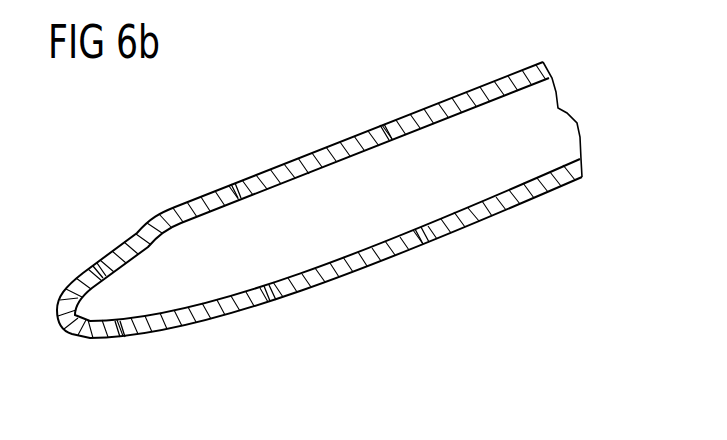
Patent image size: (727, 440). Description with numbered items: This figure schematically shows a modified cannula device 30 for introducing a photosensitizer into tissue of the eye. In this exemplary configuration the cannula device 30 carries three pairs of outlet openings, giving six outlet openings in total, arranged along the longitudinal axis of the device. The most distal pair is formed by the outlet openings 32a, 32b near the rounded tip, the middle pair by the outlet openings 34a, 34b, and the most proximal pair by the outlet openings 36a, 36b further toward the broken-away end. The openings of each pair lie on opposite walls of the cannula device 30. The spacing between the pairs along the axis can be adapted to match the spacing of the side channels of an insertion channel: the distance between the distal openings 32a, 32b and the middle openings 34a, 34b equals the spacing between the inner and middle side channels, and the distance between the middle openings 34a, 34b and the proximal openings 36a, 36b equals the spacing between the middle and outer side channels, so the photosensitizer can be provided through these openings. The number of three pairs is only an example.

The cannula device 30 is at (137, 180).
The outlet opening 32a is at (121, 337).
The outlet opening 32b is at (93, 266).
The outlet opening 34a is at (273, 300).
The outlet opening 34b is at (233, 184).
The outlet opening 36a is at (426, 242).
The outlet opening 36b is at (382, 125).